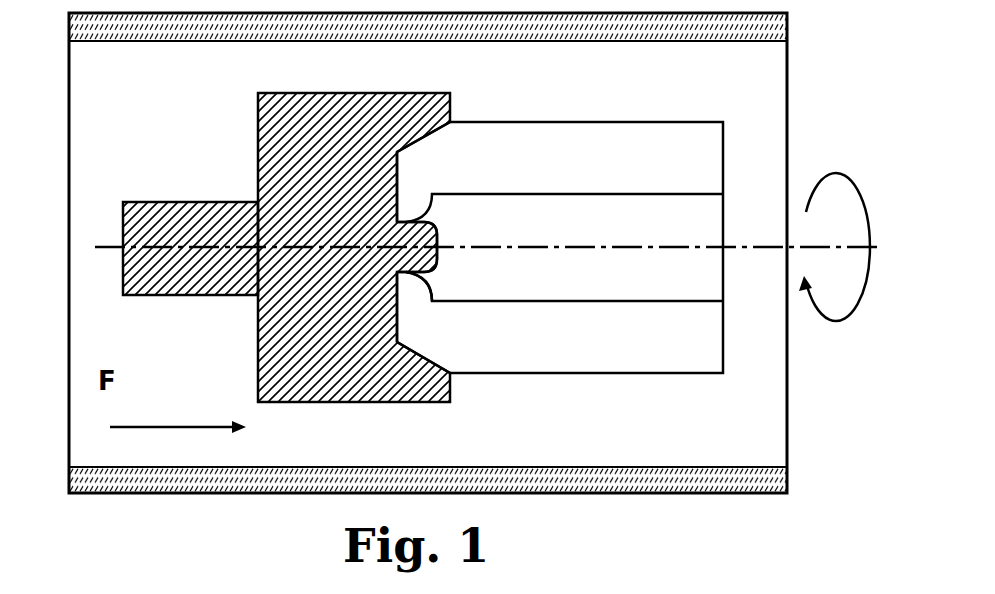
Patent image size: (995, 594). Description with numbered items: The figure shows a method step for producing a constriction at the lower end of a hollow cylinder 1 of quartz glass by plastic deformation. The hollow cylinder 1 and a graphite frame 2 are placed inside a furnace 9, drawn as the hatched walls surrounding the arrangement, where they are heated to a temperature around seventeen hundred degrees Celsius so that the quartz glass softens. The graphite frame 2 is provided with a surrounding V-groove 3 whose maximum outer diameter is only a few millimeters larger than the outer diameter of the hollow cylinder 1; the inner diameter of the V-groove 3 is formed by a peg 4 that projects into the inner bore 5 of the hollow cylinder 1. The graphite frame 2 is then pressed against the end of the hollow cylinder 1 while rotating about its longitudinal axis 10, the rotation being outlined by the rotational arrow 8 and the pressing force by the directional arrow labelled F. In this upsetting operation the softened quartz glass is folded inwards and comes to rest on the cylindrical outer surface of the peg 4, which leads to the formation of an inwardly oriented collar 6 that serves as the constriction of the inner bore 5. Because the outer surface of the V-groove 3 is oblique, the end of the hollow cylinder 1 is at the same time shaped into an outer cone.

The hollow cylinder 1 is at (592, 148).
The graphite frame 2 is at (276, 148).
The V-groove 3 is at (400, 189).
The peg 4 is at (432, 234).
The inner bore 5 is at (618, 230).
The collar 6 is at (413, 297).
The rotational arrow 8 is at (826, 173).
The furnace 9 is at (622, 472).
The longitudinal axis 10 is at (742, 248).